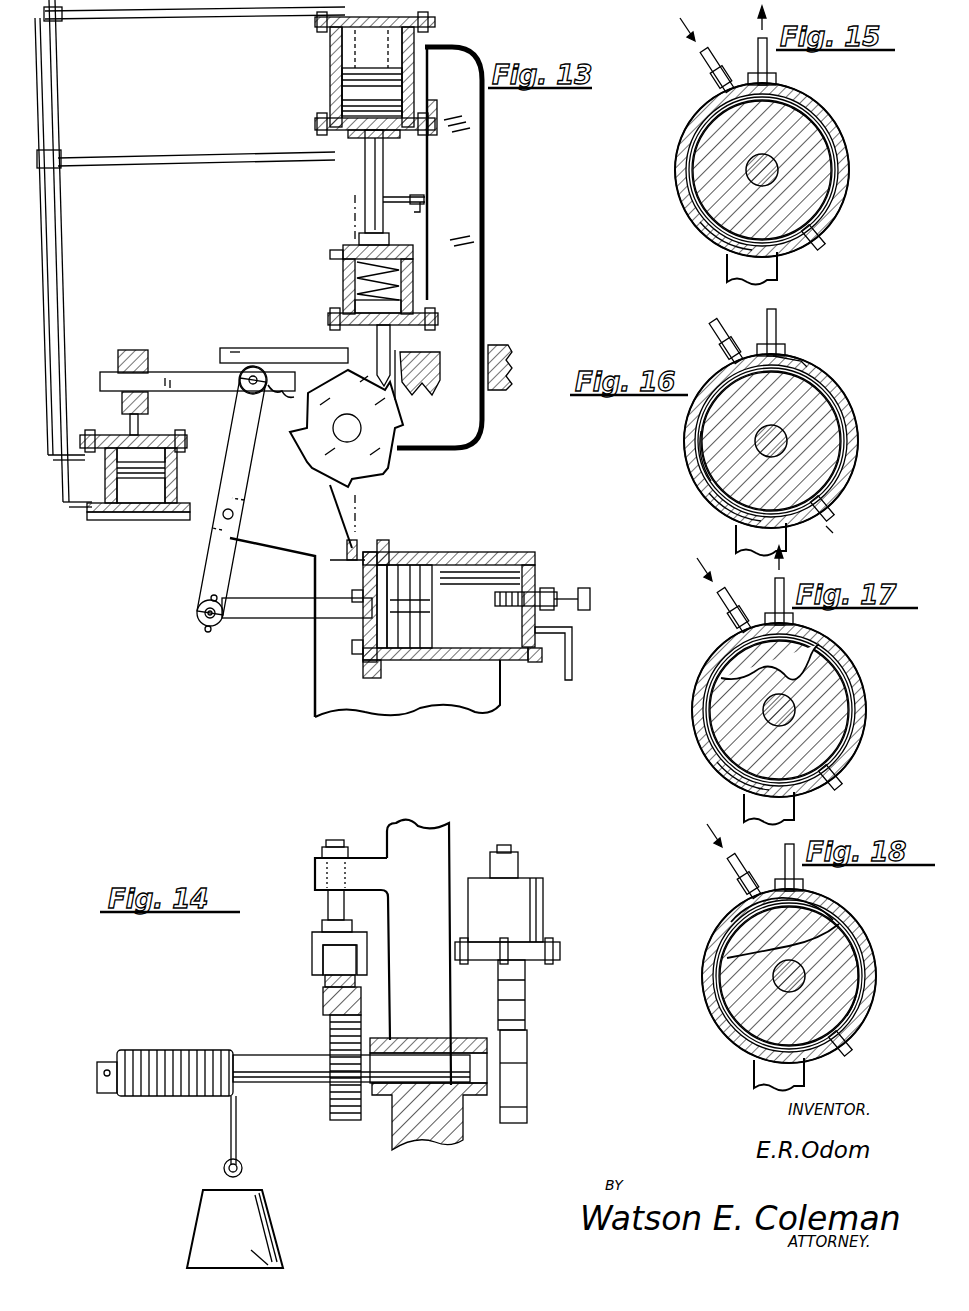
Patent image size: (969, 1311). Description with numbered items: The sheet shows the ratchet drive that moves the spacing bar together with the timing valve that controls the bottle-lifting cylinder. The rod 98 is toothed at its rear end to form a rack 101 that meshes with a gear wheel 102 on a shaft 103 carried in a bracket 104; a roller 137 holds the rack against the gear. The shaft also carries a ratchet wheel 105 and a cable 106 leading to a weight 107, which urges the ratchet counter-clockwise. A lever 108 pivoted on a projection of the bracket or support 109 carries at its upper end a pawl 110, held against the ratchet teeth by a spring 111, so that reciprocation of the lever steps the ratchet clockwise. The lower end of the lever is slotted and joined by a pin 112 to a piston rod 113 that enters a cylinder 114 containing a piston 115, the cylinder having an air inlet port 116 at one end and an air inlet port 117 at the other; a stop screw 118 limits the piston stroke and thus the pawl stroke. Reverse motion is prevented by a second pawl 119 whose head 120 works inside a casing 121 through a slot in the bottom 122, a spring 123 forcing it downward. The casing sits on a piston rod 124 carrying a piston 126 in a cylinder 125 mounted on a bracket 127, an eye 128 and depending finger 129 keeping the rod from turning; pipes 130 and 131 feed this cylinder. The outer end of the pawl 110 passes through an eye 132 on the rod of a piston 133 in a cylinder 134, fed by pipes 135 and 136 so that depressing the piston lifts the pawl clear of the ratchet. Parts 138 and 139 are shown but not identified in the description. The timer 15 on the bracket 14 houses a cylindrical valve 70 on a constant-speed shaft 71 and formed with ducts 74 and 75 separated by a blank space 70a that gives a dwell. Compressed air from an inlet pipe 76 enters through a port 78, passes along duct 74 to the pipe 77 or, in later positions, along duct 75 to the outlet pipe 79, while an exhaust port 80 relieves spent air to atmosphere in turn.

In FIG. 13, the bracket 14 is at (338, 212).
In FIG. 15, the timer 15 is at (779, 179).
In FIG. 16, the timer 15 is at (788, 450).
In FIG. 17, the timer 15 is at (799, 719).
In FIG. 18, the timer 15 is at (807, 985).
In FIG. 15, the cylindrical valve 70 is at (797, 170).
In FIG. 16, the cylindrical valve 70 is at (792, 440).
In FIG. 17, the cylindrical valve 70 is at (808, 710).
In FIG. 18, the cylindrical valve 70 is at (811, 976).
In FIG. 15, the blank space 70a is at (709, 252).
In FIG. 16, the blank space 70a is at (740, 528).
In FIG. 17, the blank space 70a is at (798, 707).
In FIG. 18, the blank space 70a is at (886, 981).
In FIG. 15, the shaft 71 is at (712, 193).
In FIG. 16, the shaft 71 is at (716, 441).
In FIG. 17, the shaft 71 is at (719, 721).
In FIG. 18, the shaft 71 is at (734, 981).
In FIG. 15, the duct 74 is at (735, 170).
In FIG. 16, the duct 74 is at (798, 441).
In FIG. 17, the duct 74 is at (801, 710).
In FIG. 18, the duct 74 is at (778, 986).
In FIG. 15, the duct 75 is at (836, 128).
In FIG. 16, the duct 75 is at (676, 459).
In FIG. 17, the duct 75 is at (739, 662).
In FIG. 18, the duct 75 is at (773, 919).
In FIG. 15, the inlet pipe 76 is at (705, 55).
In FIG. 16, the inlet pipe 76 is at (707, 341).
In FIG. 17, the inlet pipe 76 is at (719, 595).
In FIG. 18, the inlet pipe 76 is at (734, 861).
In FIG. 15, the pipe 77 is at (744, 45).
In FIG. 16, the pipe 77 is at (788, 338).
In FIG. 15, the port 78 is at (698, 90).
In FIG. 16, the port 78 is at (730, 348).
In FIG. 17, the port 78 is at (738, 617).
In FIG. 18, the port 78 is at (748, 883).
In FIG. 17, the outlet pipe 79 is at (790, 585).
In FIG. 18, the outlet pipe 79 is at (776, 863).
In FIG. 15, the exhaust port 80 is at (825, 248).
In FIG. 16, the exhaust port 80 is at (826, 528).
In FIG. 17, the exhaust port 80 is at (844, 791).
In FIG. 18, the exhaust port 80 is at (853, 1056).
In FIG. 13, the rod 98 is at (510, 360).
In FIG. 13, the rack 101 is at (417, 386).
In FIG. 14, the rack 101 is at (322, 1002).
In FIG. 14, the gear wheel 102 is at (328, 1116).
In FIG. 13, the shaft 103 is at (346, 432).
In FIG. 14, the shaft 103 is at (258, 1058).
In FIG. 14, the bracket 104 is at (426, 1144).
In FIG. 13, the ratchet wheel 105 is at (310, 444).
In FIG. 14, the ratchet wheel 105 is at (528, 1090).
In FIG. 14, the cable 106 is at (136, 1050).
In FIG. 14, the weight 107 is at (272, 1215).
In FIG. 13, the lever 108 is at (238, 470).
In FIG. 13, the bracket or support 109 is at (305, 690).
In FIG. 13, the pawl 110 is at (186, 372).
In FIG. 13, the spring 111 is at (272, 398).
In FIG. 13, the pin 112 is at (196, 613).
In FIG. 13, the piston rod 113 is at (240, 618).
In FIG. 13, the cylinder 114 is at (440, 555).
In FIG. 13, the piston 115 is at (432, 620).
In FIG. 13, the air inlet port 116 is at (385, 540).
In FIG. 13, the air inlet port 117 is at (532, 662).
In FIG. 13, the stop screw 118 is at (552, 588).
In FIG. 13, the pawl 119 is at (377, 348).
In FIG. 14, the pawl 119 is at (526, 990).
In FIG. 13, the head 120 is at (402, 302).
In FIG. 13, the casing 121 is at (414, 274).
In FIG. 14, the casing 121 is at (545, 910).
In FIG. 13, the bottom 122 is at (330, 320).
In FIG. 13, the spring 123 is at (343, 285).
In FIG. 13, the piston rod 124 is at (370, 165).
In FIG. 13, the cylinder 125 is at (330, 57).
In FIG. 13, the piston 126 is at (345, 90).
In FIG. 13, the bracket 127 is at (465, 140).
In FIG. 14, the bracket 127 is at (430, 822).
In FIG. 13, the eye 128 is at (395, 196).
In FIG. 13, the depending finger 129 is at (416, 212).
In FIG. 13, the pipe 130 is at (180, 15).
In FIG. 13, the pipe 131 is at (183, 160).
In FIG. 13, the eye 132 is at (118, 365).
In FIG. 13, the piston 133 is at (163, 440).
In FIG. 13, the cylinder 134 is at (128, 508).
In FIG. 13, the pipe 135 is at (43, 112).
In FIG. 13, the pipe 136 is at (63, 257).
In FIG. 14, the roller 137 is at (335, 950).
In FIG. 13, the link 138 is at (372, 505).
In FIG. 13, the bracket 139 is at (566, 662).